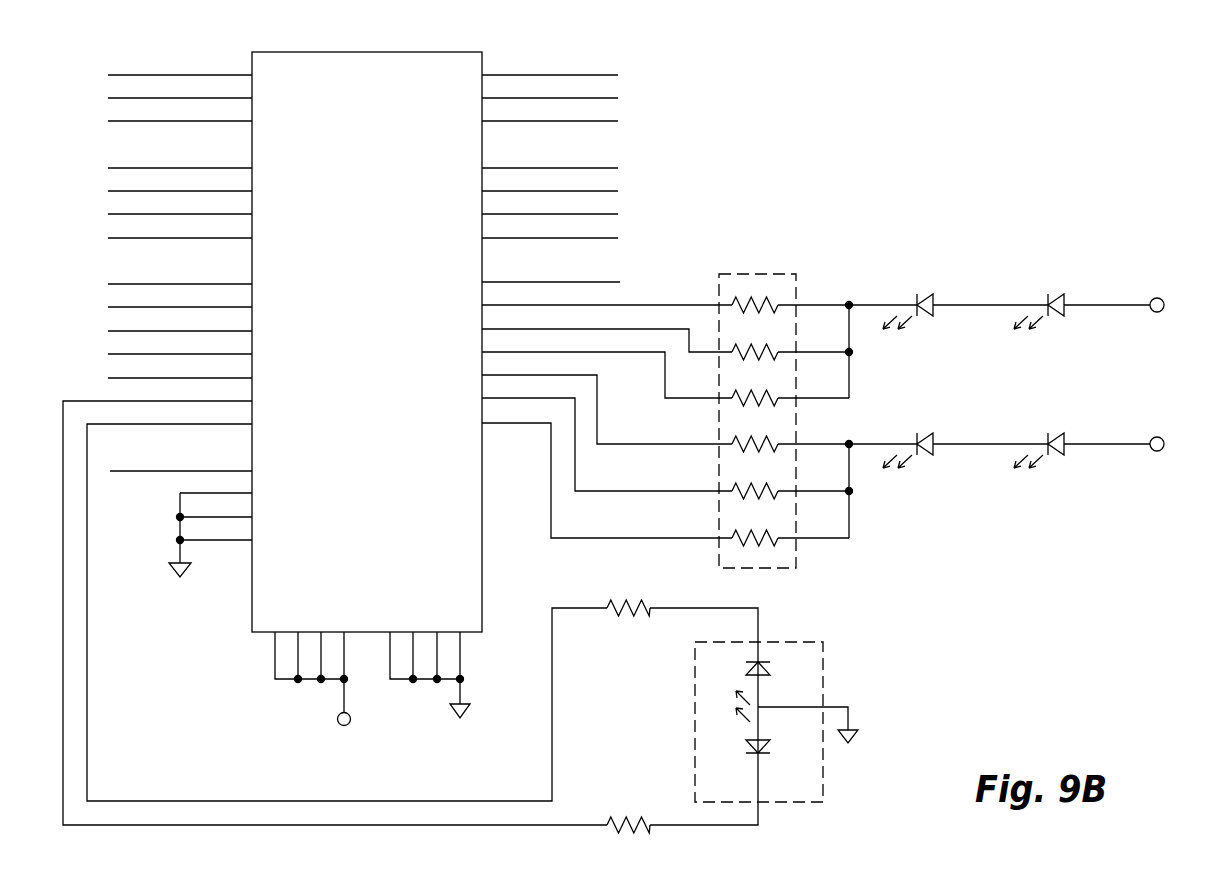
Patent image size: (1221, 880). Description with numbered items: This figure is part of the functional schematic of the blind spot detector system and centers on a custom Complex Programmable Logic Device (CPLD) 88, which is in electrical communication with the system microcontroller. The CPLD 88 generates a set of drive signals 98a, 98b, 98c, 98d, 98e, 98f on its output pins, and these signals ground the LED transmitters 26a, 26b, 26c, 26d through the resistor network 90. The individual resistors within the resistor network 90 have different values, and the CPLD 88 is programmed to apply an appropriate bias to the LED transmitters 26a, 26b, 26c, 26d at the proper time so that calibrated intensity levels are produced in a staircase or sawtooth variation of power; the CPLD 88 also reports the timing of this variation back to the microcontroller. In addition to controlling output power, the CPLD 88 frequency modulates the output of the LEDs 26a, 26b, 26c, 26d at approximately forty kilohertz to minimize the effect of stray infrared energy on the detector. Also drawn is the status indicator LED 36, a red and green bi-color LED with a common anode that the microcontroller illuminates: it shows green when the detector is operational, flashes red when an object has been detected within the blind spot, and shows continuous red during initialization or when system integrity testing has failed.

The Complex Programmable Logic Device 88 is at (252, 618).
The resistor network 90 is at (757, 274).
The LED drive line 98a is at (689, 304).
The LED drive line 98b is at (637, 328).
The LED drive line 98c is at (640, 353).
The LED drive line 98d is at (687, 446).
The LED drive line 98e is at (648, 495).
The LED drive line 98f is at (551, 512).
The LED transmitter 26a is at (933, 296).
The LED transmitter 26b is at (1065, 296).
The LED transmitter 26c is at (933, 435).
The LED transmitter 26d is at (1065, 435).
The status LED 36 is at (695, 722).